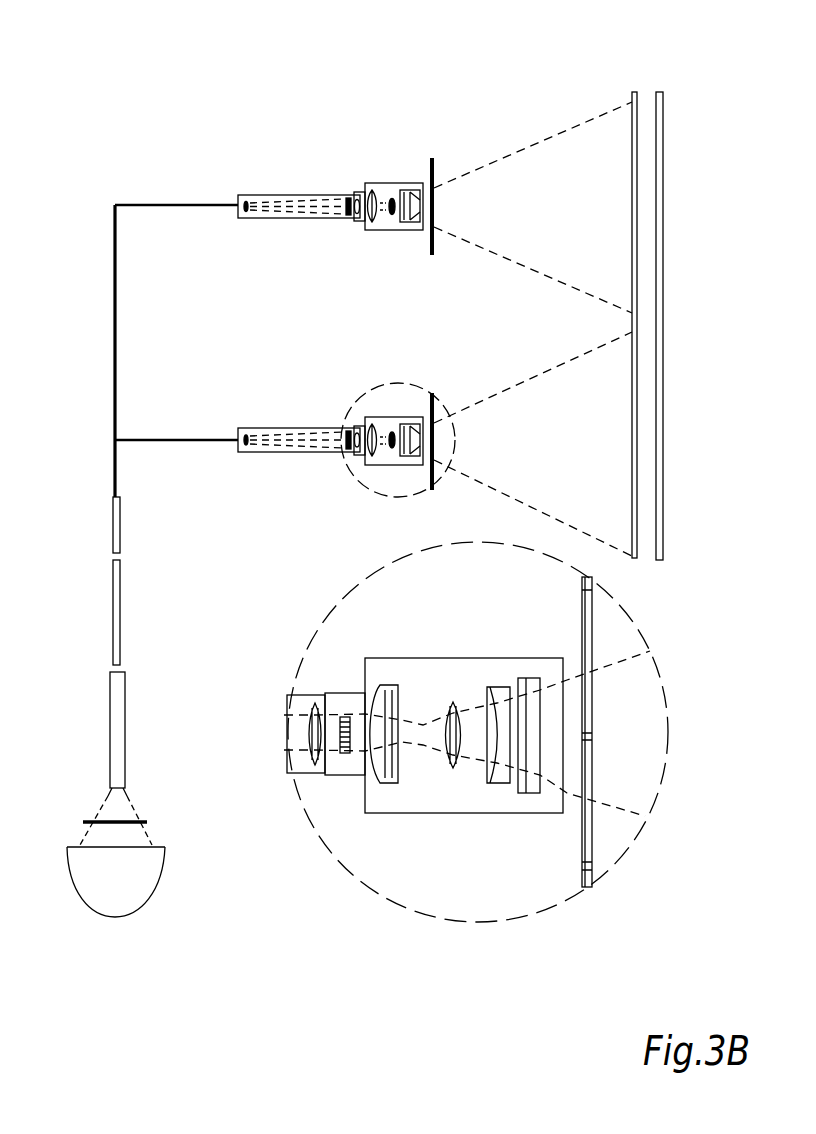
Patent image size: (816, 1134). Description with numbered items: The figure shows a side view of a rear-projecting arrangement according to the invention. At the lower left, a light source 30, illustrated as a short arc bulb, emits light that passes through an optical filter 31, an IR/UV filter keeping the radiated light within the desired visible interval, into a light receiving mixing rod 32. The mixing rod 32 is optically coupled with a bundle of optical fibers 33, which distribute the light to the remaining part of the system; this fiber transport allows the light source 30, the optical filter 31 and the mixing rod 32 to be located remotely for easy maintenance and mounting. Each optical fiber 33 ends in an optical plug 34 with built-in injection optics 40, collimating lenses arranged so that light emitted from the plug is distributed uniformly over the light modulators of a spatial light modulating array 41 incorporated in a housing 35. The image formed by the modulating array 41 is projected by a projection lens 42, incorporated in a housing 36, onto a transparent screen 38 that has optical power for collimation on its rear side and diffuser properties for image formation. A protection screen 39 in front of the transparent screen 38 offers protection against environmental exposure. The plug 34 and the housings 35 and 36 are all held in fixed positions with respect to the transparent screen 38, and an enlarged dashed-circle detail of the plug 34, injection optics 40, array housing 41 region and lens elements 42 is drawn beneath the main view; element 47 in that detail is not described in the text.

The light source 30 is at (137, 908).
The optical filter 31 is at (143, 820).
The light receiving mixing rod 32 is at (108, 750).
The optical fibers 33 is at (113, 600).
The optical plug 34 is at (253, 193).
The housing 35 is at (357, 190).
The housing 36 is at (417, 183).
The transparent screen 38 is at (632, 93).
The protection screen 39 is at (663, 260).
The injection optics 40 is at (247, 440).
The spatial light modulating array 41 is at (347, 755).
The projection lens 42 is at (528, 795).
The image plate 47 is at (592, 830).